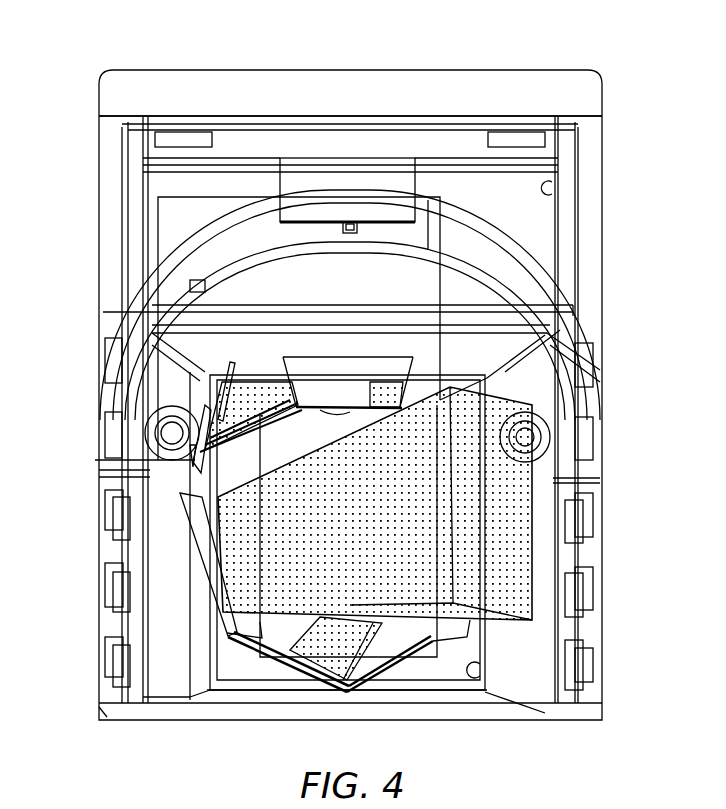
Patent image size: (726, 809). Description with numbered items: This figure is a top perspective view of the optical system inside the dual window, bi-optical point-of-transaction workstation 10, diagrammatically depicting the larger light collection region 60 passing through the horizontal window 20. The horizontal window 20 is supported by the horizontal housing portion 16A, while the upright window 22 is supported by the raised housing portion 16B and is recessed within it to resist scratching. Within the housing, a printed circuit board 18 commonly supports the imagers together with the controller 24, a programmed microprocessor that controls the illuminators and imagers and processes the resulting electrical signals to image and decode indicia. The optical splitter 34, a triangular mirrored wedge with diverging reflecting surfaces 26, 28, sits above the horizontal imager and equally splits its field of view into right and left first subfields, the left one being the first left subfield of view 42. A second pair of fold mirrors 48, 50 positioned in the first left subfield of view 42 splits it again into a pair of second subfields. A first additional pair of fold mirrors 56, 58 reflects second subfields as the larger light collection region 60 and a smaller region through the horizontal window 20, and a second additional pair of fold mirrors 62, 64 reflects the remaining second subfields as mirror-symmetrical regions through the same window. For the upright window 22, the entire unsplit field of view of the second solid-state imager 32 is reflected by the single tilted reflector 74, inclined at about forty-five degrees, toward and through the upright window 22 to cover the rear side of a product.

The point-of-transaction workstation 10 is at (298, 62).
The tilted reflector 74 is at (383, 157).
The raised housing portion 16B is at (597, 100).
The printed circuit board 18 is at (158, 210).
The controller 24 is at (190, 285).
The upright window 22 is at (552, 192).
The first left subfield of view 42 is at (253, 380).
The reflecting surface 28 is at (290, 380).
The second solid-state imager 32 is at (350, 246).
The optical splitter 34 is at (425, 353).
The fold mirror 48 is at (200, 380).
The reflecting surface 26 is at (415, 368).
The fold mirror 50 is at (192, 460).
The larger light collection region 60 is at (535, 453).
The horizontal housing portion 16A is at (588, 551).
The horizontal window 20 is at (482, 674).
The fold mirror 56 is at (243, 635).
The fold mirror 58 is at (338, 681).
The fold mirror 64 is at (382, 676).
The fold mirror 62 is at (463, 634).